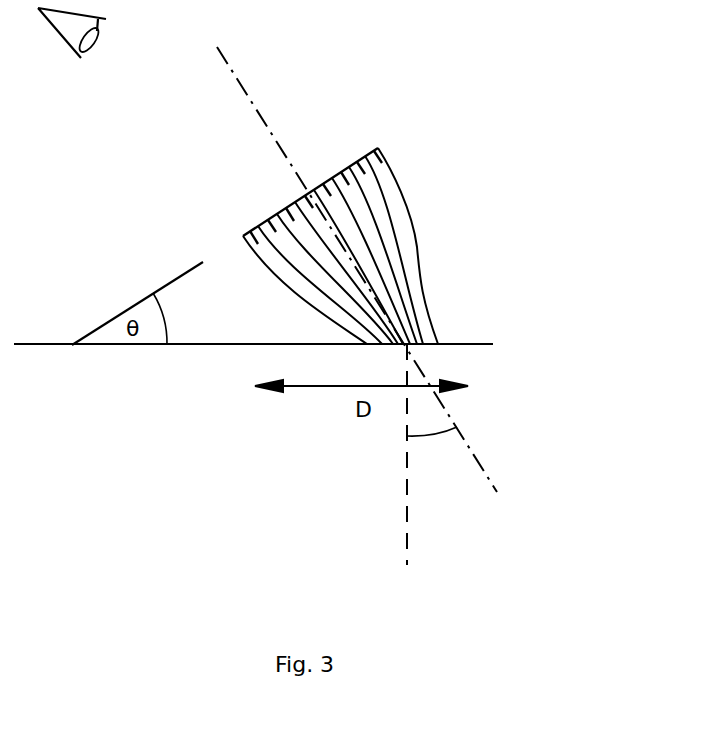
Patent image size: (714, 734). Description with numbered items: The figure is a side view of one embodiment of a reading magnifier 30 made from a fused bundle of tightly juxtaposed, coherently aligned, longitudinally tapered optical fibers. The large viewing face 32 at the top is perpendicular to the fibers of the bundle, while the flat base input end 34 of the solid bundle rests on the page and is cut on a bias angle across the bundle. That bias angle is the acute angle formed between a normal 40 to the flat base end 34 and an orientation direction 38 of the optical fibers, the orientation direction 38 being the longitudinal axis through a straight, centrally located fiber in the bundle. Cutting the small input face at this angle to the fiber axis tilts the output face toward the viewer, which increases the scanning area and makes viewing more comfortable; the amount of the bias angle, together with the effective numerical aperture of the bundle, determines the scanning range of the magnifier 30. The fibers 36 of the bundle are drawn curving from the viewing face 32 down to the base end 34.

The reading magnifier 30 is at (416, 243).
The viewing face 32 is at (335, 178).
The flat base input end 34 is at (418, 346).
The optical fibers 36 is at (330, 297).
The orientation direction 38 is at (485, 468).
The normal 40 is at (407, 527).